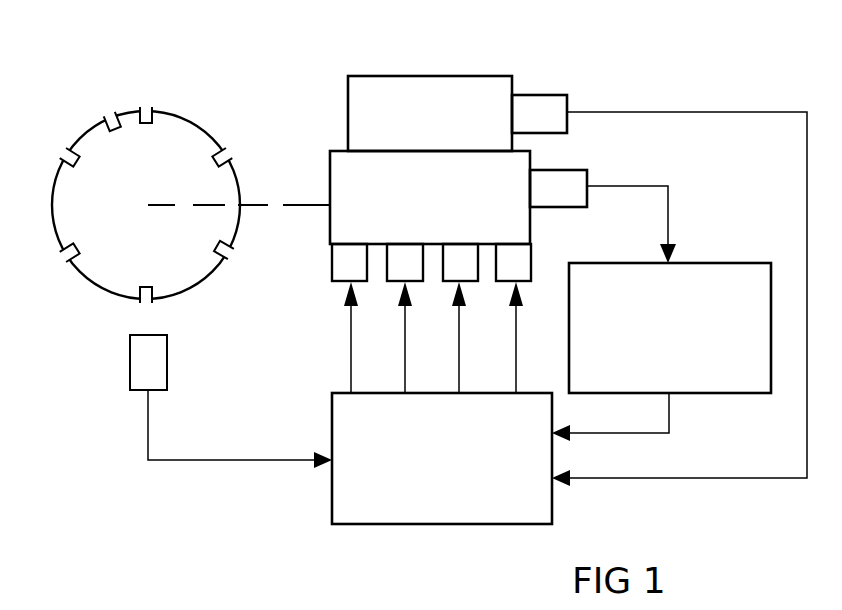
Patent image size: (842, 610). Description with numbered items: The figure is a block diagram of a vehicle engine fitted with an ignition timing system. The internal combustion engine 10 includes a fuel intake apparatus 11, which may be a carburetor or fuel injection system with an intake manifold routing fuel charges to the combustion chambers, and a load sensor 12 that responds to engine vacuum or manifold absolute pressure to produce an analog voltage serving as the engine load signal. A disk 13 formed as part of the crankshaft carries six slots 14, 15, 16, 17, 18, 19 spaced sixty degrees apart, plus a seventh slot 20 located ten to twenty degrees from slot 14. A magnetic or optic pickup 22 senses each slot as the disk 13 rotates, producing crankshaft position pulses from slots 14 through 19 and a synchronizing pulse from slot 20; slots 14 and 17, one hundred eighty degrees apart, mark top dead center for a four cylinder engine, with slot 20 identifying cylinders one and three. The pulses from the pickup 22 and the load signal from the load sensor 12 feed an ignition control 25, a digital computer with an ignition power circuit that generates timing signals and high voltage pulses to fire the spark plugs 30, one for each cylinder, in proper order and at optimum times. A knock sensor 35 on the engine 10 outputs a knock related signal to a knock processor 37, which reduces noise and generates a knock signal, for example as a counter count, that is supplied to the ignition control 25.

The internal combustion engine 10 is at (331, 151).
The fuel intake apparatus 11 is at (372, 76).
The load sensor 12 is at (558, 95).
The disk 13 is at (206, 106).
The slot 14 is at (147, 108).
The slot 15 is at (228, 158).
The slot 16 is at (224, 255).
The slot 17 is at (146, 296).
The slot 18 is at (69, 252).
The slot 19 is at (68, 155).
The seventh slot 20 is at (114, 115).
The magnetic or optic pickup 22 is at (130, 372).
The ignition control 25 is at (456, 524).
The spark plugs 30 is at (332, 272).
The knock sensor 35 is at (588, 180).
The knock processor 37 is at (735, 263).